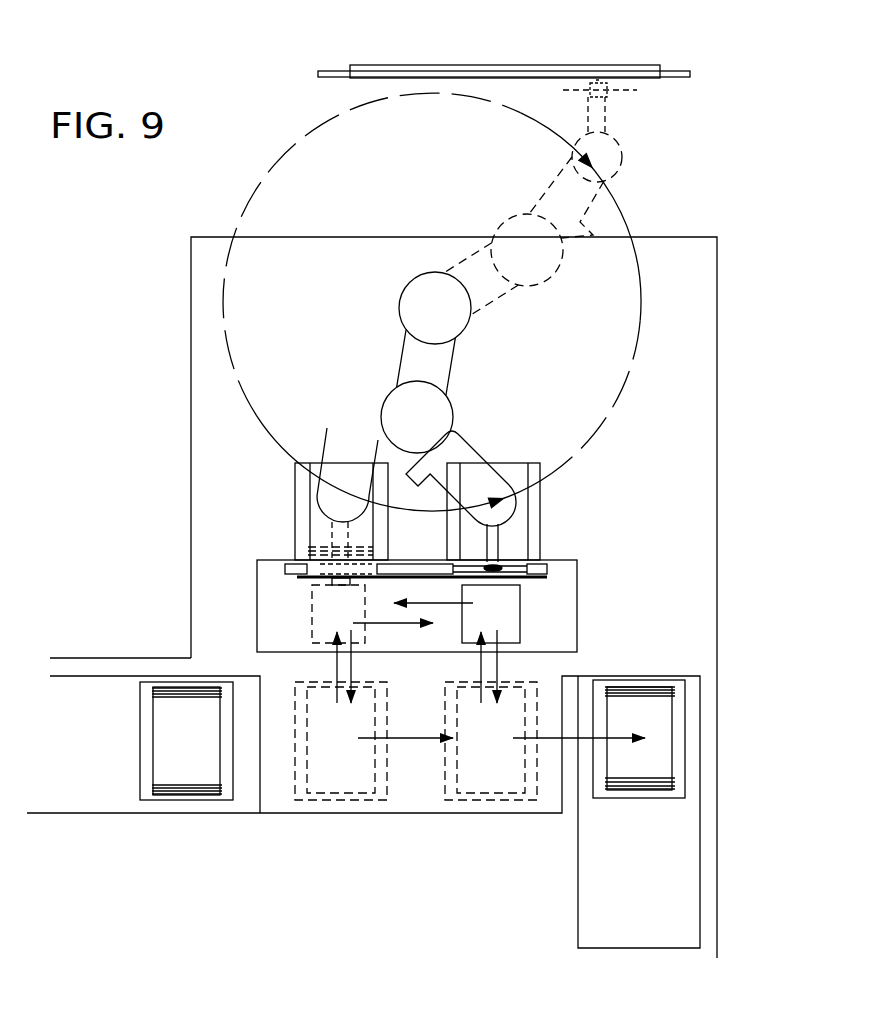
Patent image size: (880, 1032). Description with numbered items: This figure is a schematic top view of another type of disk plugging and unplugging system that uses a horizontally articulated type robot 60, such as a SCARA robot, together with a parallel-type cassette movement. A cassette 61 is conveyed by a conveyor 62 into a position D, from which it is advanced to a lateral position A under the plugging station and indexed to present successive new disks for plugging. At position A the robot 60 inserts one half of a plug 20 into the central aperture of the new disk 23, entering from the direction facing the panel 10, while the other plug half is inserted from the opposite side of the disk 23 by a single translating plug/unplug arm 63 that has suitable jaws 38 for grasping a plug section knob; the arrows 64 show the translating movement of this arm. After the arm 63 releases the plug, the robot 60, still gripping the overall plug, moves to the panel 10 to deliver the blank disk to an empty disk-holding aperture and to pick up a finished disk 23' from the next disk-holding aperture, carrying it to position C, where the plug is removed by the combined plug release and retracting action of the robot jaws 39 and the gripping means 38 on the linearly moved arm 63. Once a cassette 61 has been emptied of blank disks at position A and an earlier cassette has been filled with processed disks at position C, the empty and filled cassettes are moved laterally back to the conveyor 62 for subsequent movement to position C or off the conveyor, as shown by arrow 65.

The panel 10 is at (591, 66).
The horizontally articulated type robot 60 is at (432, 303).
The plug 20 is at (358, 566).
The robot jaws 39 is at (497, 550).
The new disk 23 is at (390, 548).
The disk 23' is at (500, 546).
The lateral position A is at (314, 576).
The position C is at (516, 550).
The jaws 38 is at (493, 584).
The translating plug/unplug arm 63 is at (512, 614).
The arrows 64 is at (450, 604).
The cassette 61 is at (165, 688).
The conveyor 62 is at (195, 739).
The position D is at (343, 752).
The arrow 65 is at (543, 740).